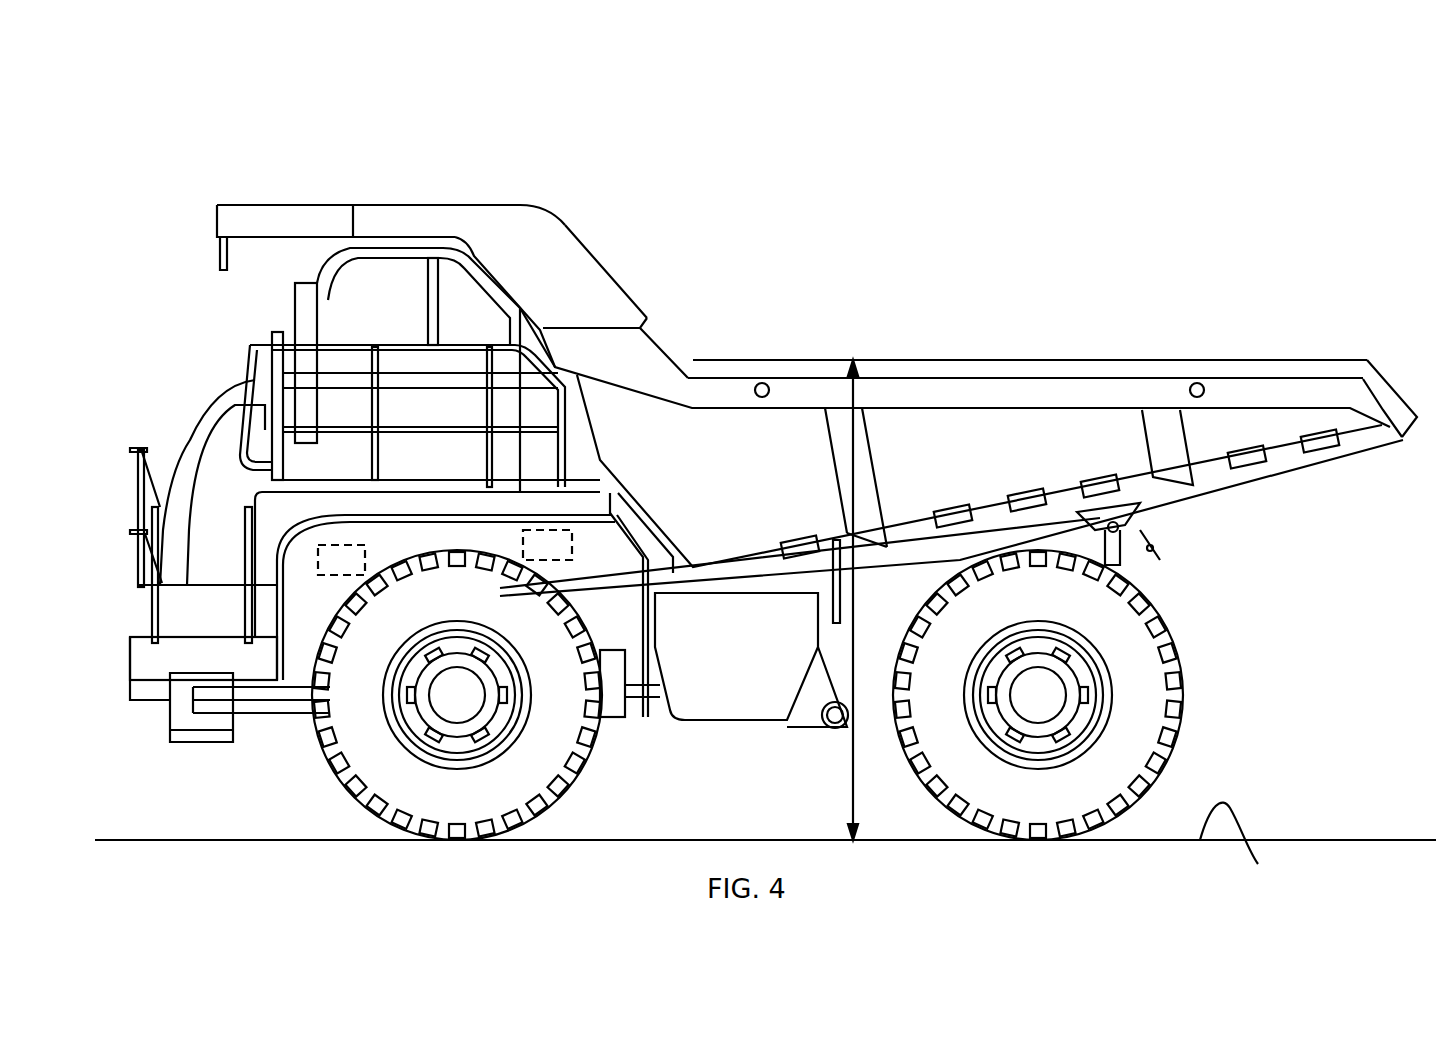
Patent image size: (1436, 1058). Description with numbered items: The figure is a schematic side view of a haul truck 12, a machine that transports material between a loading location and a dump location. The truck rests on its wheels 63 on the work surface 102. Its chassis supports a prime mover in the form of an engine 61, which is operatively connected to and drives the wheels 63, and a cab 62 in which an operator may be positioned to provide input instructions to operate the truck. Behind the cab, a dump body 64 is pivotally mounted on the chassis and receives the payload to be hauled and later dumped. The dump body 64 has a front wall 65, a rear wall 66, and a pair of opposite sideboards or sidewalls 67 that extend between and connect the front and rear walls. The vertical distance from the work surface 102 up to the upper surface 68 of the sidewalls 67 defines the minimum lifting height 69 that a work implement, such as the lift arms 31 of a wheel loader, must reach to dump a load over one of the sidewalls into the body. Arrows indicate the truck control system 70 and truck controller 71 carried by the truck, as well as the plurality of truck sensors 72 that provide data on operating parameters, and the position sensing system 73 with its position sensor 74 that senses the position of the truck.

The haul truck 12 is at (541, 168).
The lift arms 31 is at (612, 705).
The engine 61 is at (208, 351).
The cab 62 is at (302, 258).
The wheels 63 is at (472, 806).
The dump body 64 is at (600, 290).
The front wall 65 is at (668, 345).
The rear wall 66 is at (1378, 383).
The sidewalls 67 is at (1135, 393).
The upper surface 68 is at (1010, 350).
The minimum lifting height 69 is at (858, 485).
The truck control system 70 is at (362, 193).
The truck controller 71 is at (340, 558).
The truck sensors 72 is at (410, 193).
The position sensing system 73 is at (464, 193).
The position sensor 74 is at (572, 548).
The work surface 102 is at (1258, 864).